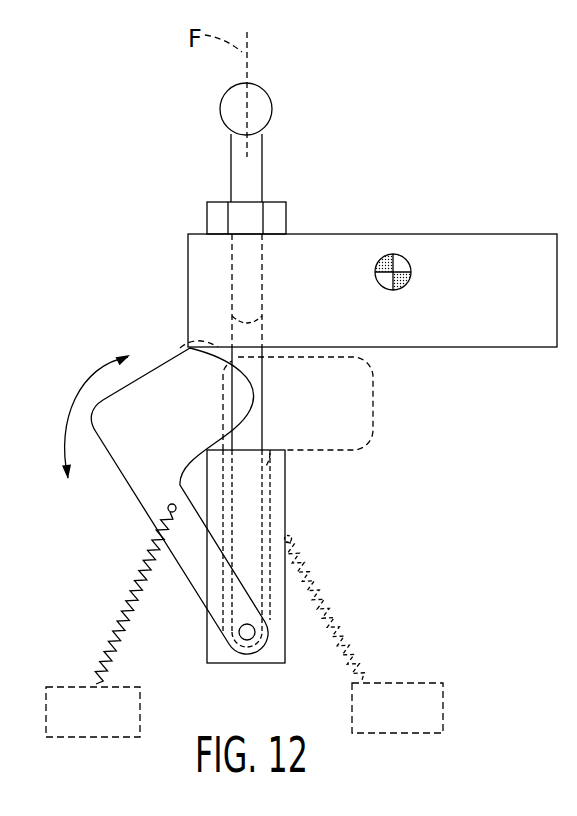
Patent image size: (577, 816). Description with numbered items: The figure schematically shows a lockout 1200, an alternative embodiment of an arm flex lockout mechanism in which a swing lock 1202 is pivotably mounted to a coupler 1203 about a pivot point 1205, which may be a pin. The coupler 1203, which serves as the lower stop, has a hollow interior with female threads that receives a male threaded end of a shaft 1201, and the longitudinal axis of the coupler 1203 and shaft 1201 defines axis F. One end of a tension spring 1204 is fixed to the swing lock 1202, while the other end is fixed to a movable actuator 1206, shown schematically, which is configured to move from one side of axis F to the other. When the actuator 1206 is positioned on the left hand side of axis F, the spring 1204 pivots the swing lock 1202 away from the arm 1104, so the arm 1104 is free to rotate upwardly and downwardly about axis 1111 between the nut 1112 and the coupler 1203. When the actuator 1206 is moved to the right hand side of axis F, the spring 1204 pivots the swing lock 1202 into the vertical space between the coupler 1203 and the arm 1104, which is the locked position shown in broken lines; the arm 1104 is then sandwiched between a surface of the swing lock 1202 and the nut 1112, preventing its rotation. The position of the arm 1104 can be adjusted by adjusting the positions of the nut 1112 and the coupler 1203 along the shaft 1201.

The arm 1104 is at (493, 248).
The axis 1111 is at (387, 257).
The nut 1112 is at (278, 202).
The lockout 1200 is at (190, 612).
The shaft 1201 is at (232, 163).
The swing lock 1202 is at (163, 358).
The coupler 1203 is at (285, 513).
The tension spring 1204 is at (117, 618).
The pivot point 1205 is at (251, 637).
The actuator 1206 is at (120, 725).